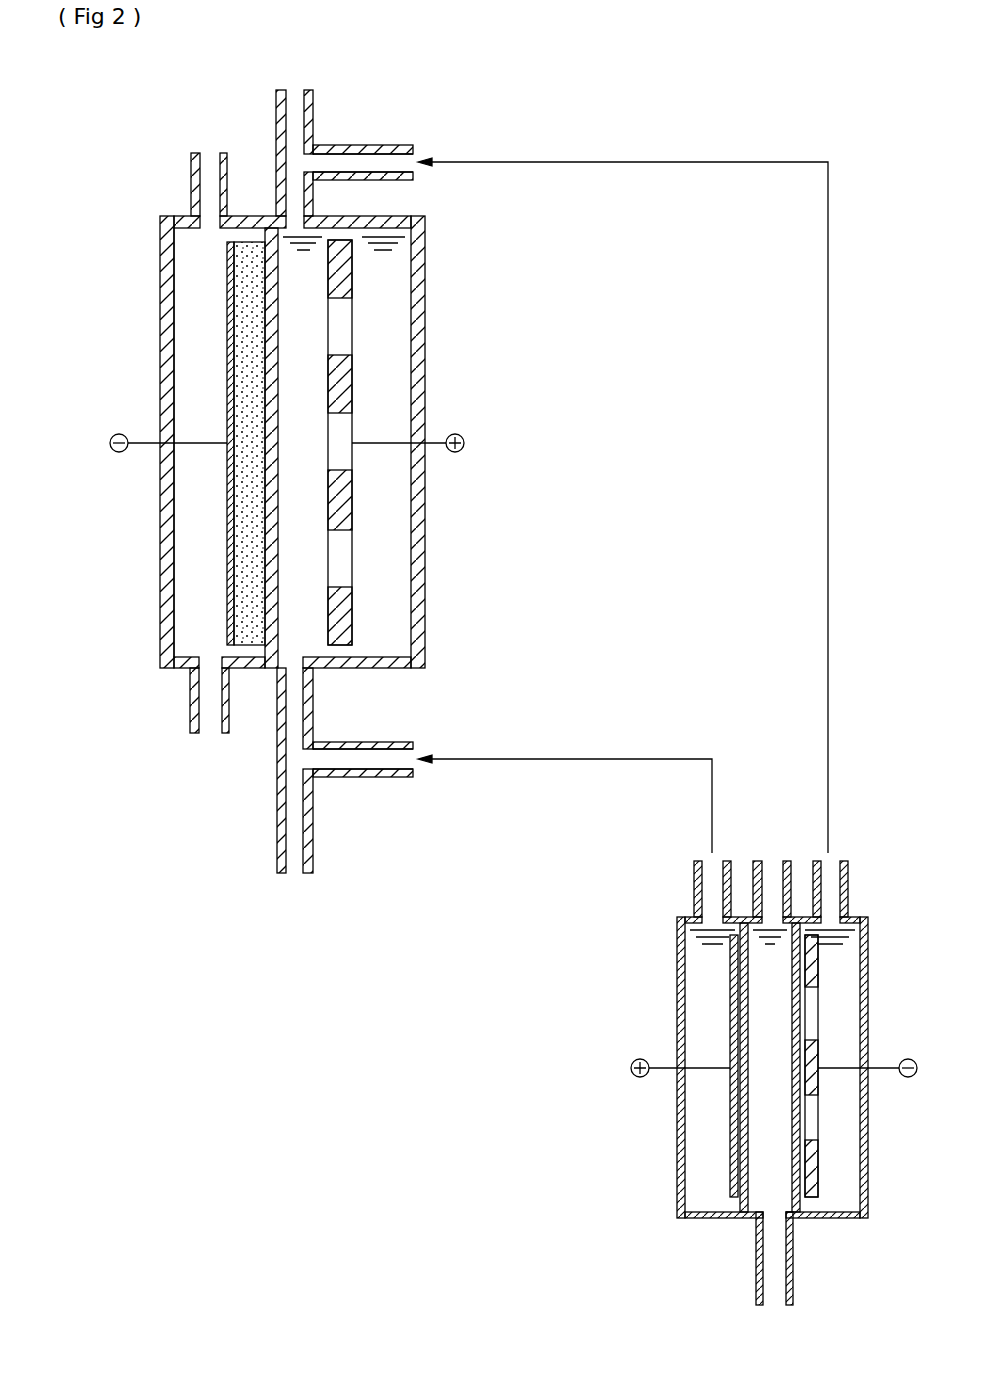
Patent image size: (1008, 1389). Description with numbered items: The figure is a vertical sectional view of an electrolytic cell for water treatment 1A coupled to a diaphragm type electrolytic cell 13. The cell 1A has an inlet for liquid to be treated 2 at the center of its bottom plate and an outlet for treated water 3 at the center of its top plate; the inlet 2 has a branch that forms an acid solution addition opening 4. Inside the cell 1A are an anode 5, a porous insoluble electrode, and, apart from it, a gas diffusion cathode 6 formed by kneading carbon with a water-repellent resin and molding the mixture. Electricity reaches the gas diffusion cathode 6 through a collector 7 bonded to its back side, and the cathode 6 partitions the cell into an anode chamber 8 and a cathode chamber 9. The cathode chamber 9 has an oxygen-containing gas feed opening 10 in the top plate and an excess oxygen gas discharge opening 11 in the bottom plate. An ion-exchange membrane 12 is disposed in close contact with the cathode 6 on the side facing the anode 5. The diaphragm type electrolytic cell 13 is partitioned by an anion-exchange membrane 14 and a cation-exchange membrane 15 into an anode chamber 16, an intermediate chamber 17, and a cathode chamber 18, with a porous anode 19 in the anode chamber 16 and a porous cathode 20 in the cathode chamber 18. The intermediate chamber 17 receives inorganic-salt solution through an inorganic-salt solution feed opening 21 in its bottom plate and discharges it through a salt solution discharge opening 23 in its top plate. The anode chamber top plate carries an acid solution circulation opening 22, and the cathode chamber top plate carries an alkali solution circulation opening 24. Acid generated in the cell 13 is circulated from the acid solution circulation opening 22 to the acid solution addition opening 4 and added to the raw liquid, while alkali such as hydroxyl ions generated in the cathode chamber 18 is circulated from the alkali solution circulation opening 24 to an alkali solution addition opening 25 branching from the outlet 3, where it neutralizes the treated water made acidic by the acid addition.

The electrolytic cell for water treatment 1A is at (160, 320).
The inlet for liquid to be treated 2 is at (278, 735).
The outlet for treated water 3 is at (276, 128).
The acid solution addition opening 4 is at (355, 742).
The anode 5 is at (353, 372).
The gas diffusion cathode 6 is at (250, 318).
The collector 7 is at (228, 500).
The anode chamber 8 is at (400, 590).
The cathode chamber 9 is at (190, 572).
The oxygen-containing gas feed opening 10 is at (193, 178).
The excess oxygen gas discharge opening 11 is at (192, 695).
The ion-exchange membrane 12 is at (272, 368).
The diaphragm type electrolytic cell 13 is at (677, 987).
The anion-exchange membrane 14 is at (740, 1150).
The cation-exchange membrane 15 is at (800, 1135).
The anode chamber 16 is at (690, 1020).
The intermediate chamber 17 is at (790, 1218).
The cathode chamber 18 is at (840, 1005).
The porous anode 19 is at (733, 965).
The porous cathode 20 is at (818, 960).
The inorganic-salt solution feed opening 21 is at (757, 1279).
The acid solution circulation opening 22 is at (694, 890).
The salt solution discharge opening 23 is at (767, 862).
The alkali solution circulation opening 24 is at (847, 882).
The alkali solution addition opening 25 is at (368, 148).